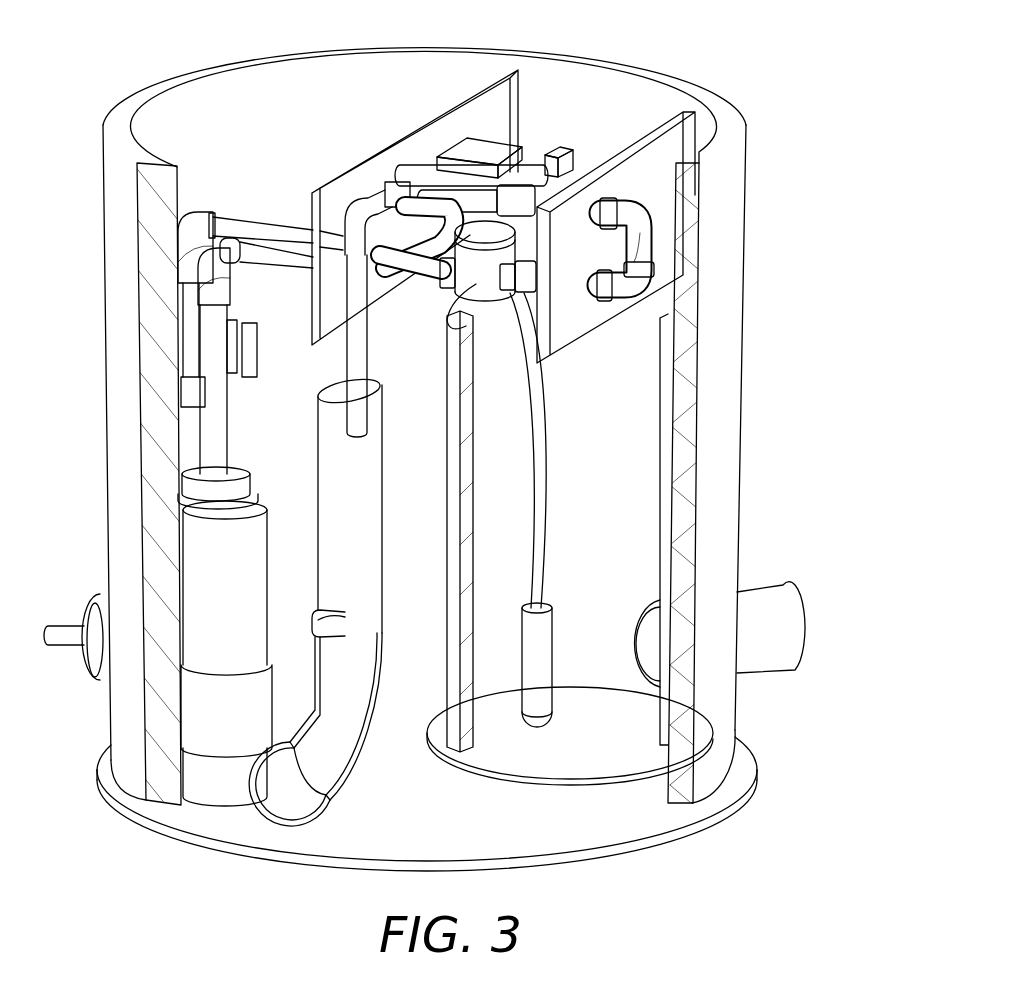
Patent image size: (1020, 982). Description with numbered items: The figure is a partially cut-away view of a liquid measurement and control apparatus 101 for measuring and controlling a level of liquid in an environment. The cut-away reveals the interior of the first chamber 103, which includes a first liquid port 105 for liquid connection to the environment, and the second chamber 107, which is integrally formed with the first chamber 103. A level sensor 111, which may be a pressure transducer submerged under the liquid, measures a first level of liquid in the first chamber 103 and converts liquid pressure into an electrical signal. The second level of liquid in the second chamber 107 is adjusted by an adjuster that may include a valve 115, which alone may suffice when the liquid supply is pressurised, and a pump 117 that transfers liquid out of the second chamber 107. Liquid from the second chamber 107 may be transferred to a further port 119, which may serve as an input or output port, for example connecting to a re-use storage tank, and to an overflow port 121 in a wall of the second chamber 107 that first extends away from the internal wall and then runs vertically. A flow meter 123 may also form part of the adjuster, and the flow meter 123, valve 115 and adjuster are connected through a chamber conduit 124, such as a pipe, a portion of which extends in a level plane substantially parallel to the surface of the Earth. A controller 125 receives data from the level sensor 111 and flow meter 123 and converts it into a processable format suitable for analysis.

The liquid measurement and control apparatus 101 is at (153, 54).
The first chamber 103 is at (640, 407).
The first liquid port 105 is at (808, 612).
The second chamber 107 is at (583, 83).
The level sensor 111 is at (543, 640).
The valve 115 is at (580, 167).
The pump 117 is at (202, 557).
The further port 119 is at (93, 660).
The overflow port 121 is at (340, 758).
The flow meter 123 is at (475, 283).
The chamber conduit 124 is at (643, 220).
The controller 125 is at (462, 148).